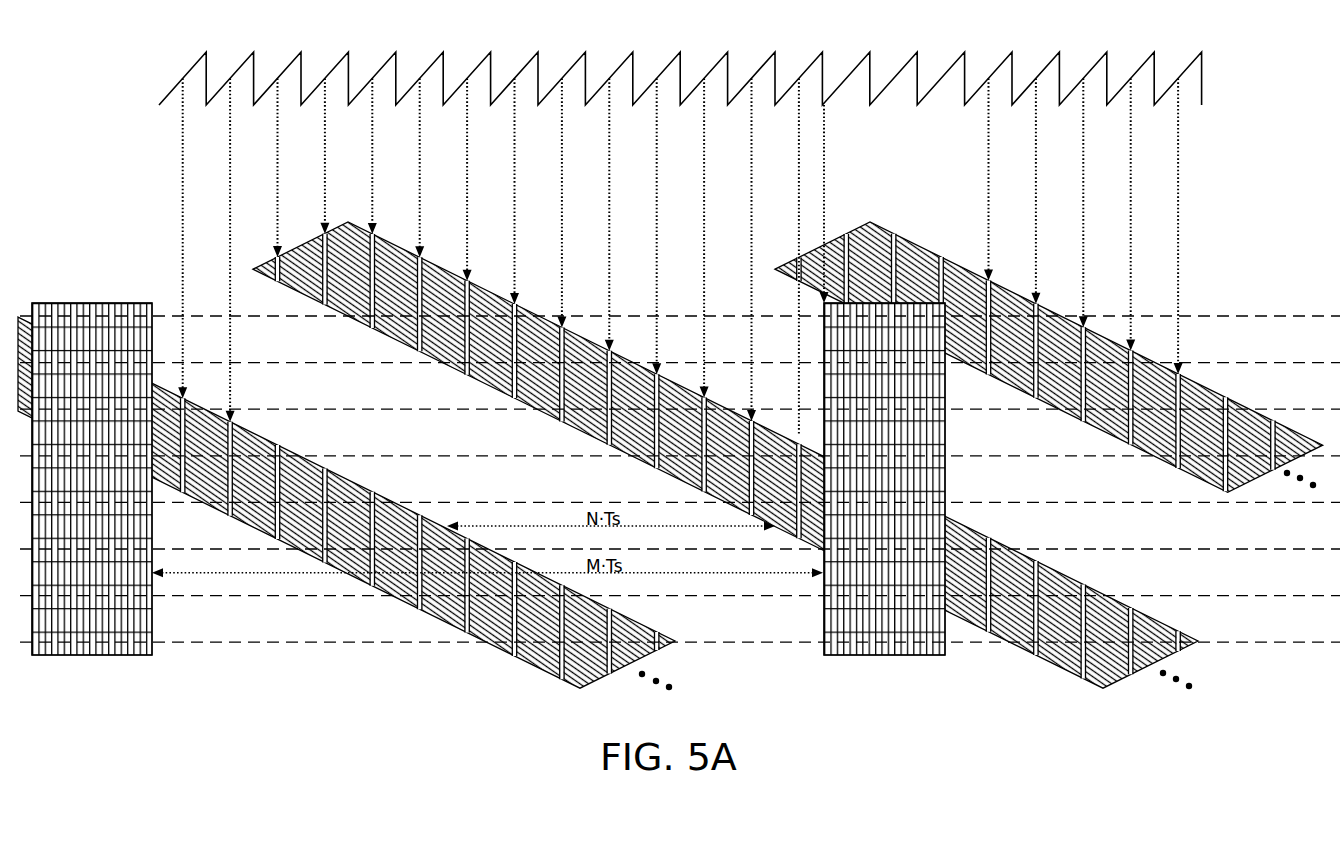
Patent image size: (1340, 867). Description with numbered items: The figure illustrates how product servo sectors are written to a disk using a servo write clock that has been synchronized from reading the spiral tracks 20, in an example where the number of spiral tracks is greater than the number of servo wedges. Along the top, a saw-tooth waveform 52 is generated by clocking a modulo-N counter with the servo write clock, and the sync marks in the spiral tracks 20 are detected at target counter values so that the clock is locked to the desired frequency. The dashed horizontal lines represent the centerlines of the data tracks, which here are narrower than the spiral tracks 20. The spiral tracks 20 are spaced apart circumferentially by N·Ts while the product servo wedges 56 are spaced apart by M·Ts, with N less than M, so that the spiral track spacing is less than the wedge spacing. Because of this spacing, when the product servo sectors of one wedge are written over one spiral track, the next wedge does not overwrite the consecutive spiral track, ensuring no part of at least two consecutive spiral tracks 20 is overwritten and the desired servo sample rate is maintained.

The saw-tooth waveform 52 is at (190, 70).
The product servo wedges 56 is at (488, 504).
The spiral tracks 20 is at (670, 471).